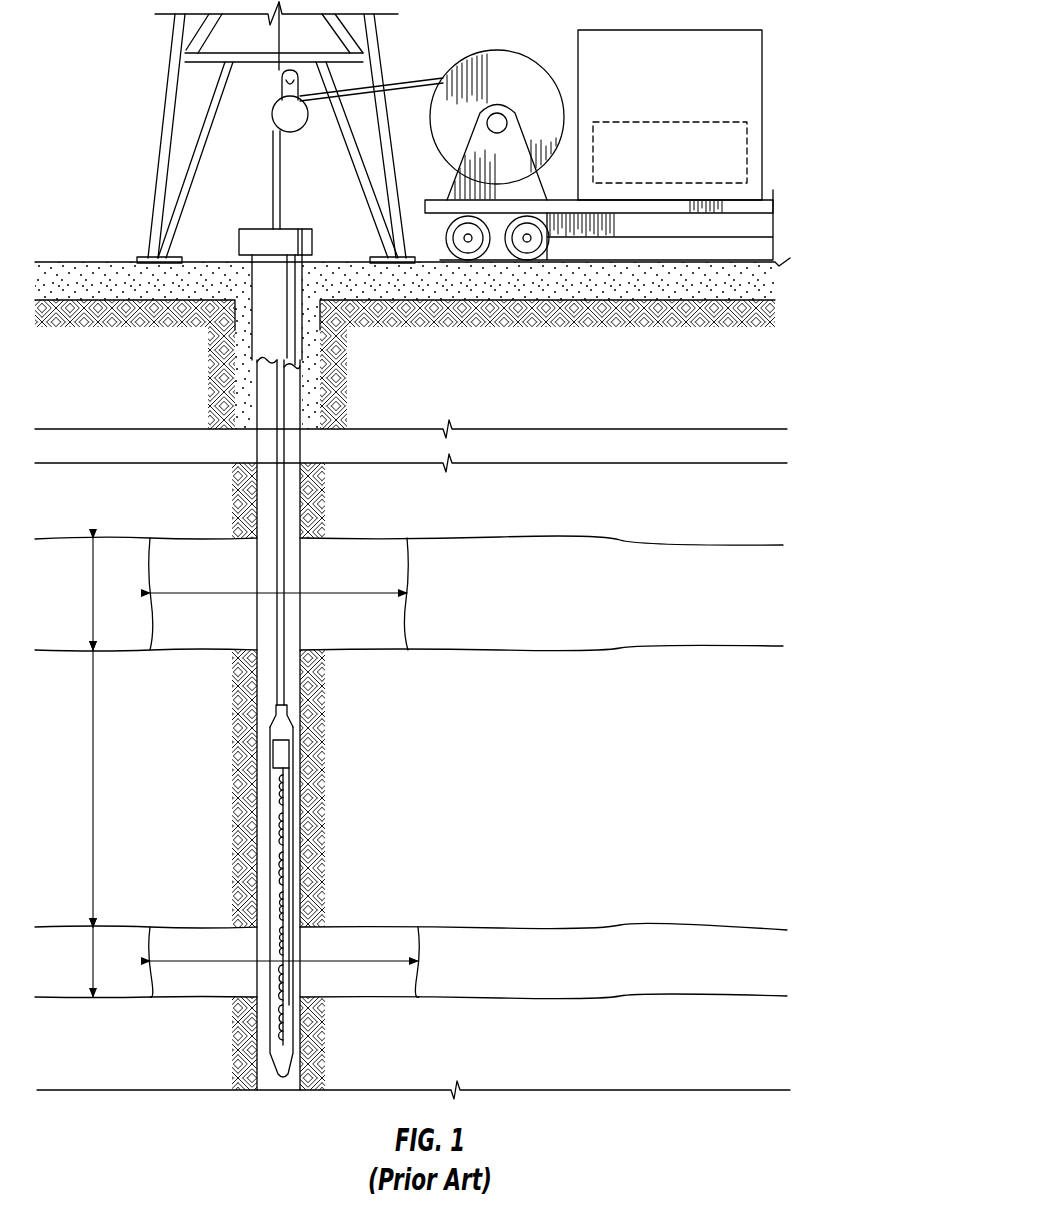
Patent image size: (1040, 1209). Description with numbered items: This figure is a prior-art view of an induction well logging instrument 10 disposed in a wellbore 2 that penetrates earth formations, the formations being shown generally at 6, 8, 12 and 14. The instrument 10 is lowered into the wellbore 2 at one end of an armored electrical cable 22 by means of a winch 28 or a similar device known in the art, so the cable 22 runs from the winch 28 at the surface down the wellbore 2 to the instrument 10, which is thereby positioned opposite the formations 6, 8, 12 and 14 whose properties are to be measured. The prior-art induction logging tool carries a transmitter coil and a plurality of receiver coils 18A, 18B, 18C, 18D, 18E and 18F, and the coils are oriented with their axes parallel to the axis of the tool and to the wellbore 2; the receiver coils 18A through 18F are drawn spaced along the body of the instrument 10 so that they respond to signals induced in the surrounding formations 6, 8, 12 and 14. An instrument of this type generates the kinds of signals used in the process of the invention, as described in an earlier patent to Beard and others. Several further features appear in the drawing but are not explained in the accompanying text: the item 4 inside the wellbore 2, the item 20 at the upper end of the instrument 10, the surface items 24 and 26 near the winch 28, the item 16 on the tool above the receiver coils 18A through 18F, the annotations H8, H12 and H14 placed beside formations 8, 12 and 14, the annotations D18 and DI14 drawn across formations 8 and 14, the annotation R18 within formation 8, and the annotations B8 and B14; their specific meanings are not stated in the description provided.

The wellbore 2 is at (263, 527).
The borehole fluid 4 is at (265, 578).
The earth formation 6 is at (501, 513).
The earth formation 8 is at (612, 550).
The induction well logging instrument 10 is at (268, 740).
The earth formation 12 is at (471, 792).
The earth formation 14 is at (623, 930).
The transmitter coil 16 is at (276, 790).
The receiver coil 18A is at (276, 827).
The receiver coil 18B is at (276, 865).
The receiver coil 18C is at (276, 905).
The receiver coil 18D is at (276, 935).
The receiver coil 18E is at (276, 965).
The receiver coil 18F is at (276, 1017).
The cable head 20 is at (290, 722).
The armored electrical cable 22 is at (275, 500).
The surface electronics 24 is at (667, 30).
The computer 26 is at (670, 120).
The winch 28 is at (497, 52).
The thickness of layer 8 H8 is at (92, 594).
The thickness of layer 12 H12 is at (92, 790).
The thickness of layer 14 H14 is at (92, 965).
The invaded zone diameter in layer 8 D18 is at (325, 593).
The invaded zone diameter in layer 14 DI14 is at (340, 961).
The invaded zone resistivity R18 is at (229, 633).
The invaded zone boundary in layer 8 B8 is at (407, 610).
The invaded zone boundary in layer 14 B14 is at (418, 978).